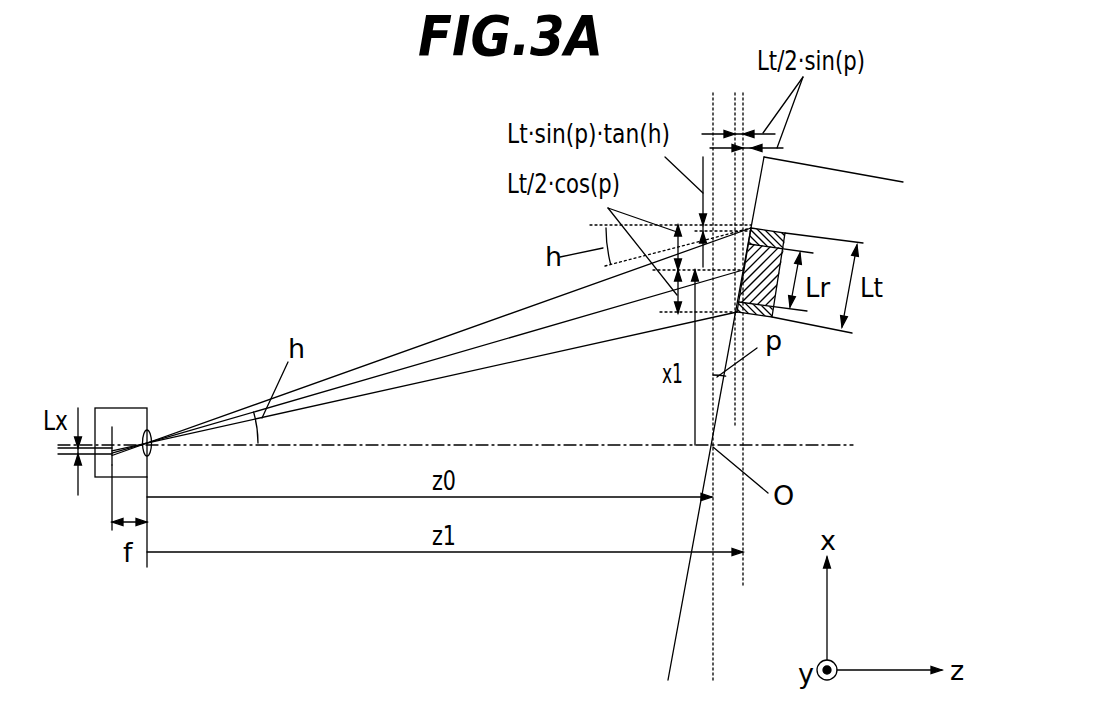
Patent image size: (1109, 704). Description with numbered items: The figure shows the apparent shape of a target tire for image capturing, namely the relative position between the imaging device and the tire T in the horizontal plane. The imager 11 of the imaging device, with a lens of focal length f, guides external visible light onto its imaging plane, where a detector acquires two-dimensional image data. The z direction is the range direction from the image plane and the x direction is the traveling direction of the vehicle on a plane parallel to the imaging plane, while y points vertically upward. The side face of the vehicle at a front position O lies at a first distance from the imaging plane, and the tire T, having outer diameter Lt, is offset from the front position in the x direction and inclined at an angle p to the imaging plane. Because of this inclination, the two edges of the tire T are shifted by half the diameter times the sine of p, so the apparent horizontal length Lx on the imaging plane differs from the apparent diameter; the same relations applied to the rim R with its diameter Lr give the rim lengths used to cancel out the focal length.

The imager 11 is at (127, 408).
The tire T is at (752, 227).
The rim R is at (787, 232).